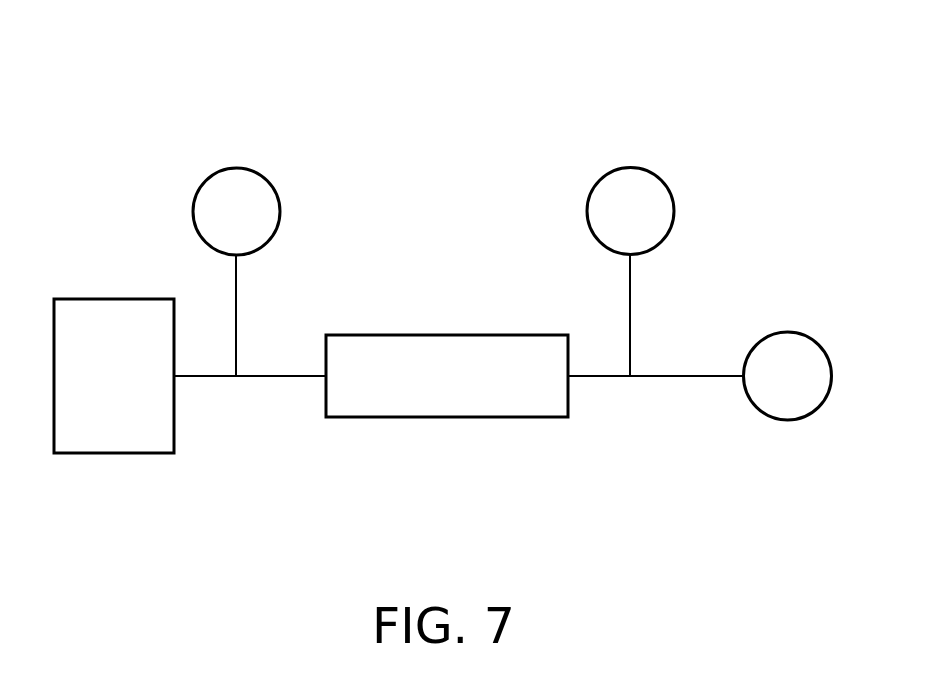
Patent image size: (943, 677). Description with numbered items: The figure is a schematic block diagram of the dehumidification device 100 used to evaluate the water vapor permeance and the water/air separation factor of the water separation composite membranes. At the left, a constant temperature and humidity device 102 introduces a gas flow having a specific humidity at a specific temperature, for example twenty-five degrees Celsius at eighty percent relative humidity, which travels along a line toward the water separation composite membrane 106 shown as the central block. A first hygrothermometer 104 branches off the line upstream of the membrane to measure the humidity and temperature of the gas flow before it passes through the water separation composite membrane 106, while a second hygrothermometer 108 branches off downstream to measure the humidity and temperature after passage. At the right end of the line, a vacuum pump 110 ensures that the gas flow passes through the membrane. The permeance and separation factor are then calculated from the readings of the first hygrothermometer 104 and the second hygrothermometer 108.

The dehumidification device 100 is at (771, 52).
The constant temperature and humidity device 102 is at (114, 453).
The first hygrothermometer 104 is at (235, 168).
The water separation composite membrane 106 is at (448, 417).
The second hygrothermometer 108 is at (629, 168).
The vacuum pump 110 is at (789, 420).